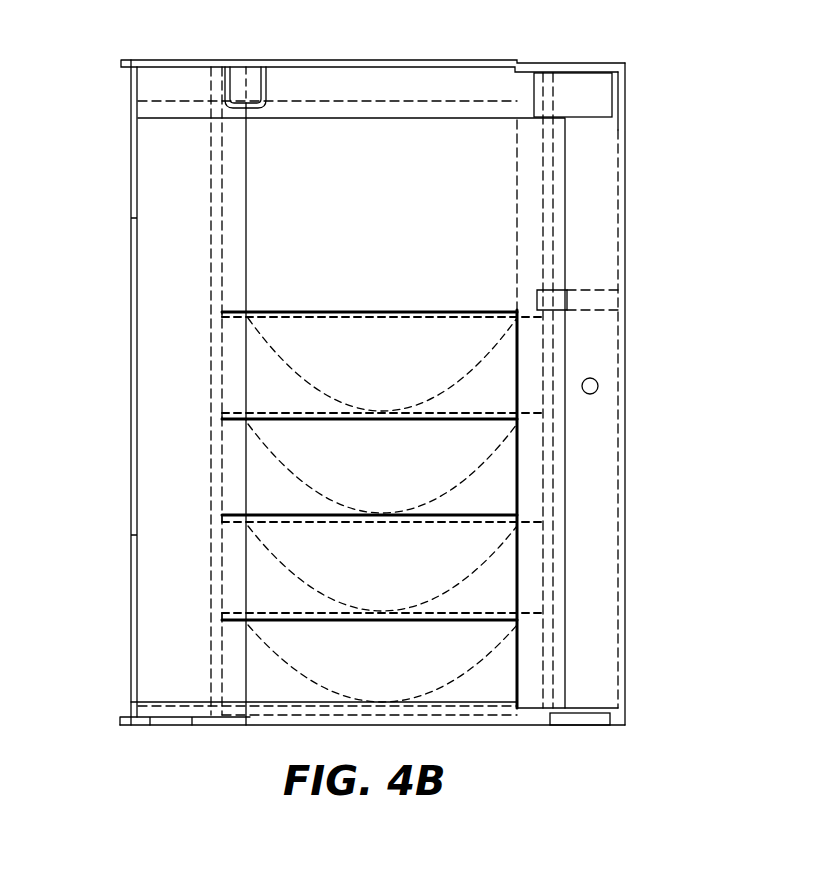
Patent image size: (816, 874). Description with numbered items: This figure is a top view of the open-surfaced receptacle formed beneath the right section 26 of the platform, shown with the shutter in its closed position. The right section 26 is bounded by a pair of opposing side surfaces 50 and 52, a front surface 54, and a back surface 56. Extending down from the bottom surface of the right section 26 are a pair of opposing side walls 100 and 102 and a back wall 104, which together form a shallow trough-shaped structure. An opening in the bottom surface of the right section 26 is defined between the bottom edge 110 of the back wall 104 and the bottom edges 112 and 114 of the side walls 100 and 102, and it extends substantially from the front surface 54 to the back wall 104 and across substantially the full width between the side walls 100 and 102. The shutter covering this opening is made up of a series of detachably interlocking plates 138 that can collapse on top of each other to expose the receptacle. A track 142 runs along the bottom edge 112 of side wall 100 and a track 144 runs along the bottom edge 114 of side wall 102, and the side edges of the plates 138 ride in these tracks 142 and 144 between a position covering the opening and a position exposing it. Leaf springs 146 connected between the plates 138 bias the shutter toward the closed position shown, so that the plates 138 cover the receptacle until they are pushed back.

The right section 26 is at (688, 121).
The side surface 50 is at (131, 252).
The side surface 52 is at (625, 510).
The front surface 54 is at (573, 727).
The back surface 56 is at (328, 60).
The side wall 100 is at (517, 572).
The side wall 102 is at (246, 568).
The back wall 104 is at (303, 312).
The bottom edge 110 is at (396, 312).
The bottom edge 112 is at (517, 368).
The bottom edge 114 is at (246, 378).
The interlocking plate 138 is at (397, 396).
The track 142 is at (527, 470).
The track 144 is at (232, 472).
The leaf spring 146 is at (319, 390).